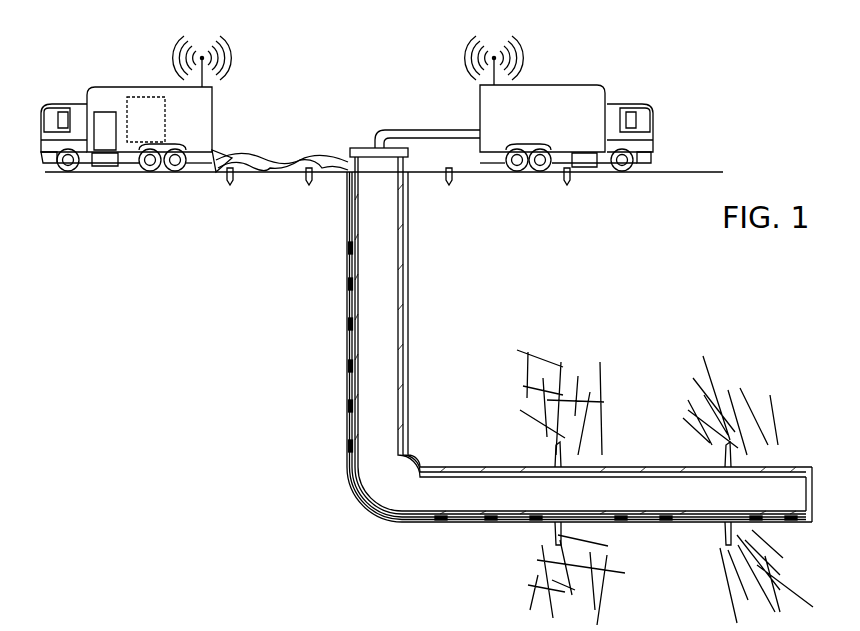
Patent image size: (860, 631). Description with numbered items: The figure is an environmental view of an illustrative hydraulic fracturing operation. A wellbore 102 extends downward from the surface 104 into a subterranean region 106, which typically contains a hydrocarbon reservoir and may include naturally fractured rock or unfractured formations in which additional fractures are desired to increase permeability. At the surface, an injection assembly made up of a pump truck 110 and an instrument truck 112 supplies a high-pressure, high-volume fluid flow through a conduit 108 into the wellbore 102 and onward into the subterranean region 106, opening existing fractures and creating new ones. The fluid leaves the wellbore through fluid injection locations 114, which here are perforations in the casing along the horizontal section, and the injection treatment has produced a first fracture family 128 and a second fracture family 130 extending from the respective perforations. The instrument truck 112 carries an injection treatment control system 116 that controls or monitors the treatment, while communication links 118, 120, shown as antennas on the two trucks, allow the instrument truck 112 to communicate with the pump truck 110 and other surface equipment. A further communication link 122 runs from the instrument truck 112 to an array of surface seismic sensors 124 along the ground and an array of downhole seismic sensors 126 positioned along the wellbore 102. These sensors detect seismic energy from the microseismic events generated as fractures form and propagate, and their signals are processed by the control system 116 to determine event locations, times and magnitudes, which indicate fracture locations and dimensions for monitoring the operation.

The wellbore 102 is at (407, 236).
The surface 104 is at (659, 175).
The subterranean region 106 is at (686, 596).
The conduit 108 is at (402, 134).
The pump truck 110 is at (600, 87).
The instrument truck 112 is at (90, 91).
The fluid injection location 114 is at (726, 478).
The injection treatment control system 116 is at (143, 97).
The communication link 118 is at (216, 62).
The communication link 120 is at (506, 62).
The communication link 122 is at (219, 162).
The surface seismic sensor 124 is at (305, 180).
The downhole seismic sensor 126 is at (347, 248).
The first fracture family 128 is at (603, 345).
The second fracture family 130 is at (768, 345).